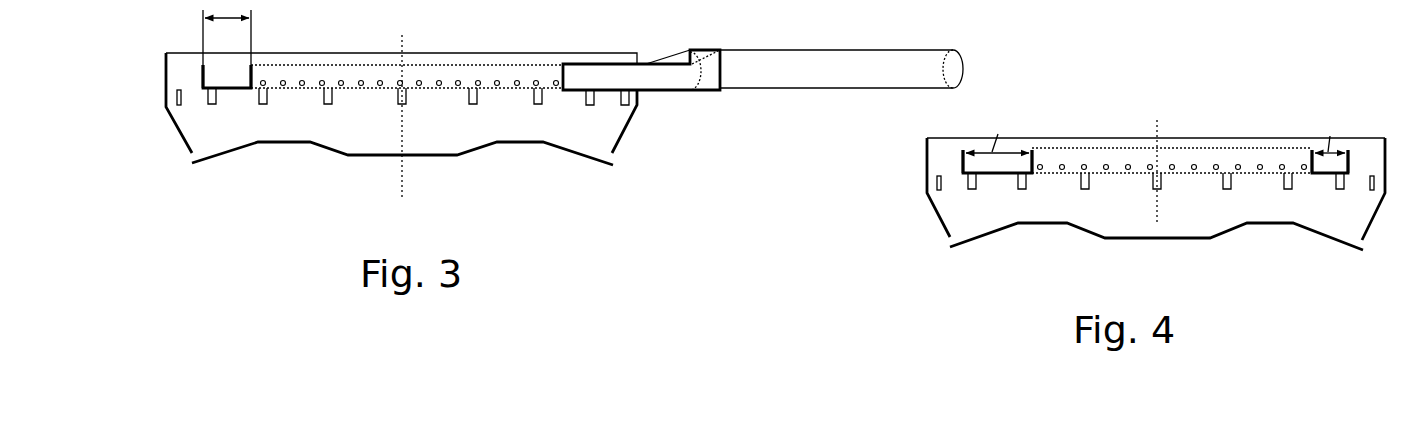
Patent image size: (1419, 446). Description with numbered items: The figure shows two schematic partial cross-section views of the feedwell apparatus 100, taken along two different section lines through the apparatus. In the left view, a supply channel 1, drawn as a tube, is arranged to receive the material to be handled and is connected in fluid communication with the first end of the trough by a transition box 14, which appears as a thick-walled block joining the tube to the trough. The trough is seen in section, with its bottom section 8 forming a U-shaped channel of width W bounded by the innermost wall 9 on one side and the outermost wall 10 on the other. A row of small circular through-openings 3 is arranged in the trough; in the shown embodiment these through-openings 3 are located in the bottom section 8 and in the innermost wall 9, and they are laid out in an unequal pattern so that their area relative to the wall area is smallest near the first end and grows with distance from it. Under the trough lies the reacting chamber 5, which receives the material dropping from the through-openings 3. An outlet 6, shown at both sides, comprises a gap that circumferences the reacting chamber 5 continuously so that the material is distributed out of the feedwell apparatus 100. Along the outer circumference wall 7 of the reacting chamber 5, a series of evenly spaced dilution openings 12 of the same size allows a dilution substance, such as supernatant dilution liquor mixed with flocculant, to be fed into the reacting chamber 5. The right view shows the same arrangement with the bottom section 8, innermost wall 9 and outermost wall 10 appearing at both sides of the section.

In FIG. 3, the supply channel 1 is at (822, 66).
In FIG. 3, the through-openings 3 is at (508, 81).
In FIG. 4, the through-openings 3 is at (1172, 167).
In FIG. 3, the reacting chamber 5 is at (330, 135).
In FIG. 4, the reacting chamber 5 is at (1080, 213).
In FIG. 3, the outlet 6 is at (186, 160).
In FIG. 4, the outlet 6 is at (939, 260).
In FIG. 4, the outer circumference wall 7 is at (925, 157).
In FIG. 3, the bottom section 8 is at (225, 90).
In FIG. 4, the bottom section 8 is at (1003, 174).
In FIG. 3, the innermost wall 9 is at (252, 68).
In FIG. 4, the innermost wall 9 is at (1052, 128).
In FIG. 3, the outermost wall 10 is at (203, 68).
In FIG. 4, the outermost wall 10 is at (963, 156).
In FIG. 3, the dilution openings 12 is at (478, 98).
In FIG. 4, the dilution openings 12 is at (1277, 197).
In FIG. 3, the transition box 14 is at (670, 78).
In FIG. 3, the feedwell apparatus 100 is at (510, 202).
In FIG. 4, the feedwell apparatus 100 is at (1226, 276).